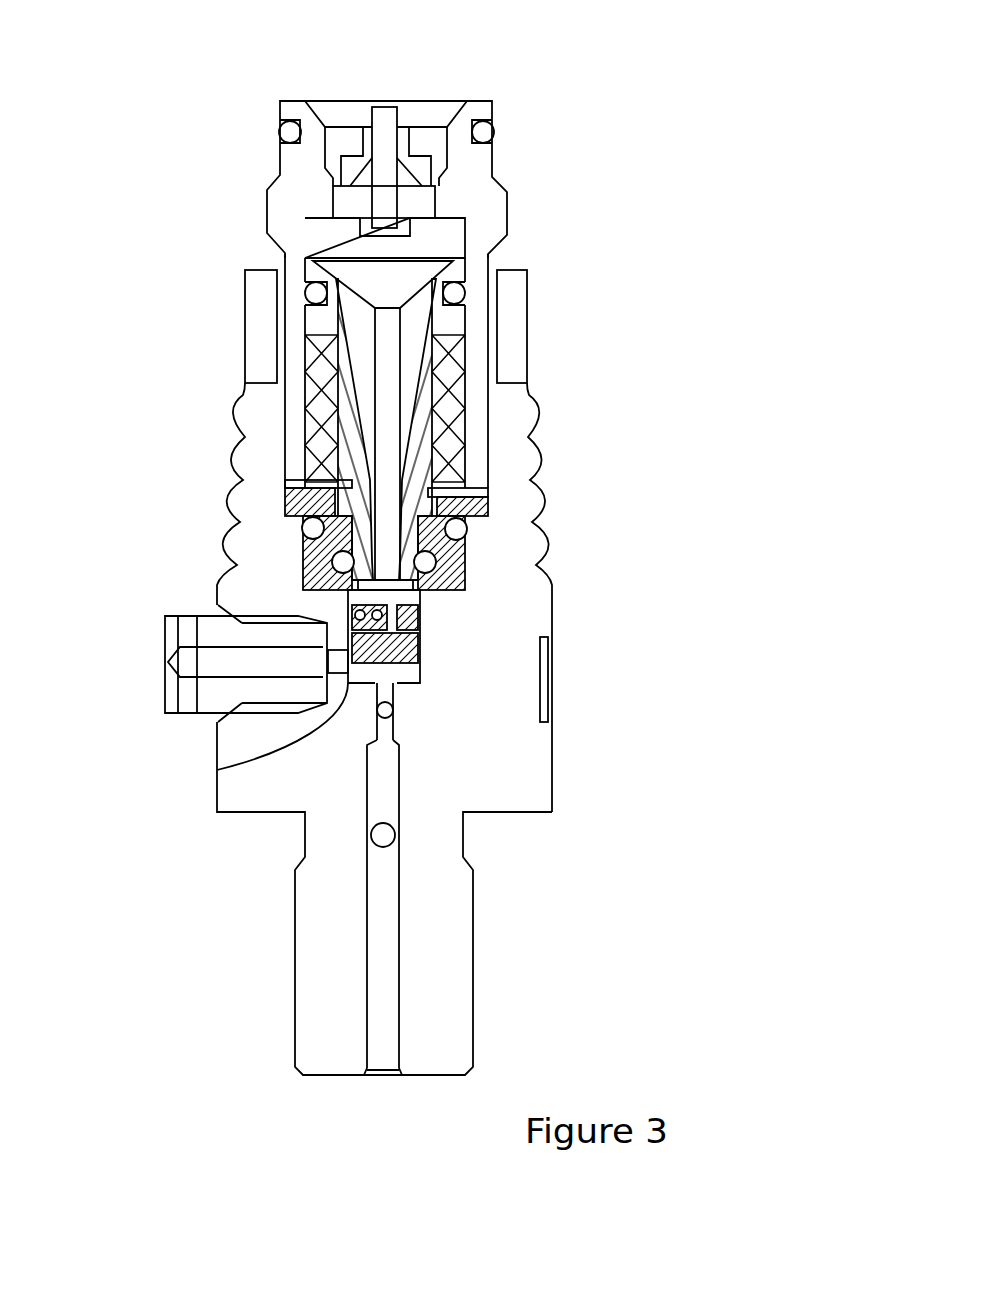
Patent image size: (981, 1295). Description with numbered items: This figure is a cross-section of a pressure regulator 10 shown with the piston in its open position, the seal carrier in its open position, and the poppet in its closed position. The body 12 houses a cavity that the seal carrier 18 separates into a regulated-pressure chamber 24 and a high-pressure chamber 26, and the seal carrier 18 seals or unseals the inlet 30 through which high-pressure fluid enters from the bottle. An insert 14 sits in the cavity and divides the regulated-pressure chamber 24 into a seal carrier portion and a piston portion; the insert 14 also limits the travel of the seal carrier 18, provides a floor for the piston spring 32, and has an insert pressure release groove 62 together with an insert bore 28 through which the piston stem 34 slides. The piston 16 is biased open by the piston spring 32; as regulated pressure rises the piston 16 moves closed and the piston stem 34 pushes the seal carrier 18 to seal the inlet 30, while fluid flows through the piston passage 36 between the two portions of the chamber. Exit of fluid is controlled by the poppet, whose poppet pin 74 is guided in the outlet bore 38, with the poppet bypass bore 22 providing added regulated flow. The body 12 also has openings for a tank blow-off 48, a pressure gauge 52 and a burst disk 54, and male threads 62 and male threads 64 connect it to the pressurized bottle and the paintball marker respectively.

The pressure regulator 10 is at (372, 28).
The body 12 is at (517, 217).
The insert 14 is at (488, 508).
The piston 16 is at (303, 320).
The seal carrier 18 is at (343, 598).
The poppet bypass bore 22 is at (323, 150).
The regulated-pressure chamber 24 is at (321, 237).
The high-pressure chamber 26 is at (403, 800).
The insert bore 28 is at (440, 540).
The inlet 30 is at (383, 1078).
The piston spring 32 is at (307, 370).
The piston stem 34 is at (345, 513).
The piston passage 36 is at (370, 412).
The outlet bore 38 is at (408, 137).
The tank blow-off 48 is at (383, 847).
The pressure gauge 52 is at (395, 708).
The burst disk 54 is at (217, 770).
The male threads 62 is at (470, 480).
The male threads 64 is at (265, 192).
The poppet pin 74 is at (363, 103).